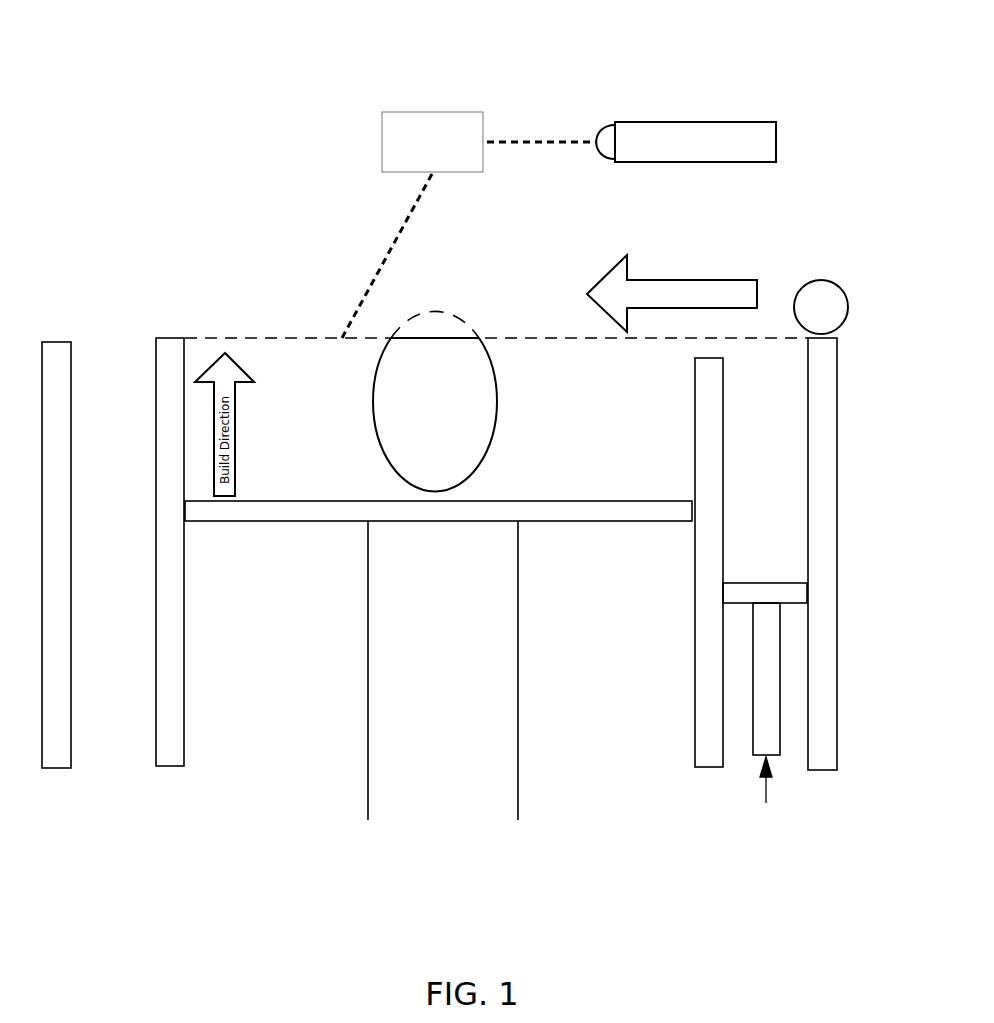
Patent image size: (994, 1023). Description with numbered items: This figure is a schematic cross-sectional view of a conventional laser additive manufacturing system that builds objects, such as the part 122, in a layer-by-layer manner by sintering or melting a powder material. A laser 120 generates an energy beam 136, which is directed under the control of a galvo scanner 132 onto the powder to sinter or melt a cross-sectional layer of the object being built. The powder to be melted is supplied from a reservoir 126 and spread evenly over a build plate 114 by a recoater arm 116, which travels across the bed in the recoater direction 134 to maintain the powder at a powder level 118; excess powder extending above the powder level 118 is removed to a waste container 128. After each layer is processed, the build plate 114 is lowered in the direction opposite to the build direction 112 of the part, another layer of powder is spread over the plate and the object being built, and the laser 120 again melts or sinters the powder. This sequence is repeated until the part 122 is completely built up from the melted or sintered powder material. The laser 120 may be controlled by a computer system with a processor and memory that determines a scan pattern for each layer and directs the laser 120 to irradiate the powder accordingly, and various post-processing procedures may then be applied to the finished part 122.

The build chamber 112 is at (581, 397).
The build plate 114 is at (640, 500).
The recoater arm 116 is at (818, 280).
The powder level 118 is at (248, 338).
The laser 120 is at (641, 122).
The part 122 is at (375, 415).
The reservoir 126 is at (773, 437).
The waste container 128 is at (137, 663).
The galvo scanner 132 is at (433, 112).
The recoater direction 134 is at (602, 272).
The energy beam 136 is at (387, 252).